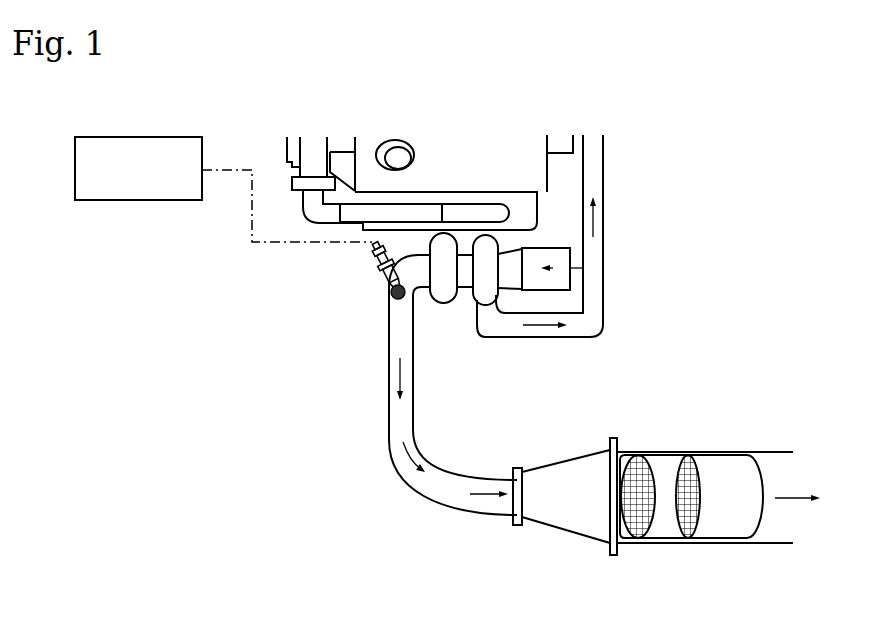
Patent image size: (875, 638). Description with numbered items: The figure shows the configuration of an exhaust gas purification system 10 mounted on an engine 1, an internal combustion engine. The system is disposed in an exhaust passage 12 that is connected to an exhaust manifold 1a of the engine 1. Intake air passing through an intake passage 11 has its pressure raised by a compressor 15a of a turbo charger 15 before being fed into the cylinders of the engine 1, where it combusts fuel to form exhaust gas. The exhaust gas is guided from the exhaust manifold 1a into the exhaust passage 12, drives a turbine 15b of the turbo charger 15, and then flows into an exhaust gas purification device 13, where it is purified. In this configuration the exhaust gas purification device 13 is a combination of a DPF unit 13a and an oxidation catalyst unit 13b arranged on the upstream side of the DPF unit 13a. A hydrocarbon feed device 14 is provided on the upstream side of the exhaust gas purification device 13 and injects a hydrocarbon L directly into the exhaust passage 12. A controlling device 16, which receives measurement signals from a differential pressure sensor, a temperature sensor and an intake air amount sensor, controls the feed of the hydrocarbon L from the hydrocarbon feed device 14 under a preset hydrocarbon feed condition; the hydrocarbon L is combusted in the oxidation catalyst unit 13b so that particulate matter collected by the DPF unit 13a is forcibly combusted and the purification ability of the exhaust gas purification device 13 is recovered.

The engine 1 is at (535, 180).
The exhaust manifold 1a is at (530, 217).
The exhaust gas purification system 10 is at (810, 337).
The intake passage 11 is at (603, 173).
The exhaust passage 12 is at (438, 482).
The exhaust gas purification device 13 is at (697, 450).
The DPF unit 13a is at (718, 527).
The oxidation catalyst unit 13b is at (663, 532).
The hydrocarbon feed device 14 is at (383, 275).
The turbo charger 15 is at (485, 72).
The compressor 15a is at (485, 243).
The turbine 15b is at (438, 234).
The controlling device 16 is at (100, 183).
The hydrocarbon L is at (385, 305).